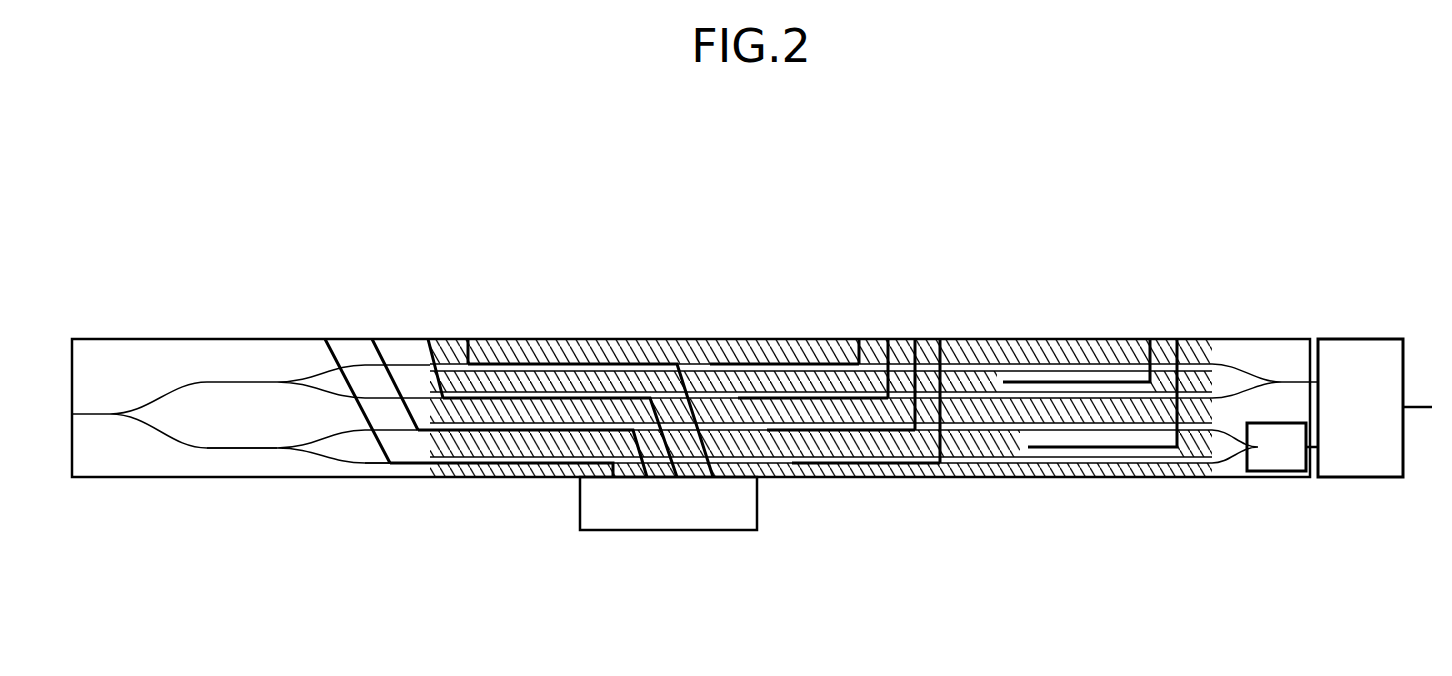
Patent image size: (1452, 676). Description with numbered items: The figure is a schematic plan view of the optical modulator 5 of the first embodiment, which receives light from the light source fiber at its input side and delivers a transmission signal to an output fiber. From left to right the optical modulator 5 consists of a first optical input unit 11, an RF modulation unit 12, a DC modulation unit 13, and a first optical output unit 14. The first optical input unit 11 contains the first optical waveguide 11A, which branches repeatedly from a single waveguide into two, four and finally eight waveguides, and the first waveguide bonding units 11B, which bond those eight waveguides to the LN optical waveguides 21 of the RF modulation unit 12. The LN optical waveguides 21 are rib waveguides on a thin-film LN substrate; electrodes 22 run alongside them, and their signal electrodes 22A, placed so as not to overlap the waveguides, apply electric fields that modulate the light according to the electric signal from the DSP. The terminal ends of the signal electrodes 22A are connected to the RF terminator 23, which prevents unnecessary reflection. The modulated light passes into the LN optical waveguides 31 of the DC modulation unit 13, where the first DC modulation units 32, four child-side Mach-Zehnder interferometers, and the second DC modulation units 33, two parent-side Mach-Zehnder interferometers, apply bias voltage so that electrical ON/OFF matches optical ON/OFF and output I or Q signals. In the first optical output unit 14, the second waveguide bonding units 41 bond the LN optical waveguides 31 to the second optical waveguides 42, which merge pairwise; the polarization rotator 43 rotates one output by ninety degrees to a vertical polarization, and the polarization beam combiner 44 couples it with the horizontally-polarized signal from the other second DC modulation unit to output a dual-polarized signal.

The optical modulator 5 is at (1322, 153).
The first optical input unit 11 is at (72, 328).
The first optical waveguide 11A is at (233, 448).
The first waveguide bonding units 11B is at (480, 339).
The RF modulation unit 12 is at (693, 328).
The DC modulation unit 13 is at (1210, 328).
The first optical output unit 14 is at (1310, 328).
The LN optical waveguides 21 is at (446, 339).
The electrodes 22 is at (513, 372).
The signal electrodes 22A is at (378, 347).
The RF terminator 23 is at (665, 531).
The LN optical waveguides 31 is at (737, 347).
The first DC modulation units 32 is at (815, 347).
The second DC modulation units 33 is at (1103, 445).
The second waveguide bonding units 41 is at (1220, 480).
The second optical waveguides 42 is at (1220, 480).
The polarization rotator (PR) 43 is at (1273, 471).
The polarization beam combiner (PBC) 44 is at (1358, 339).